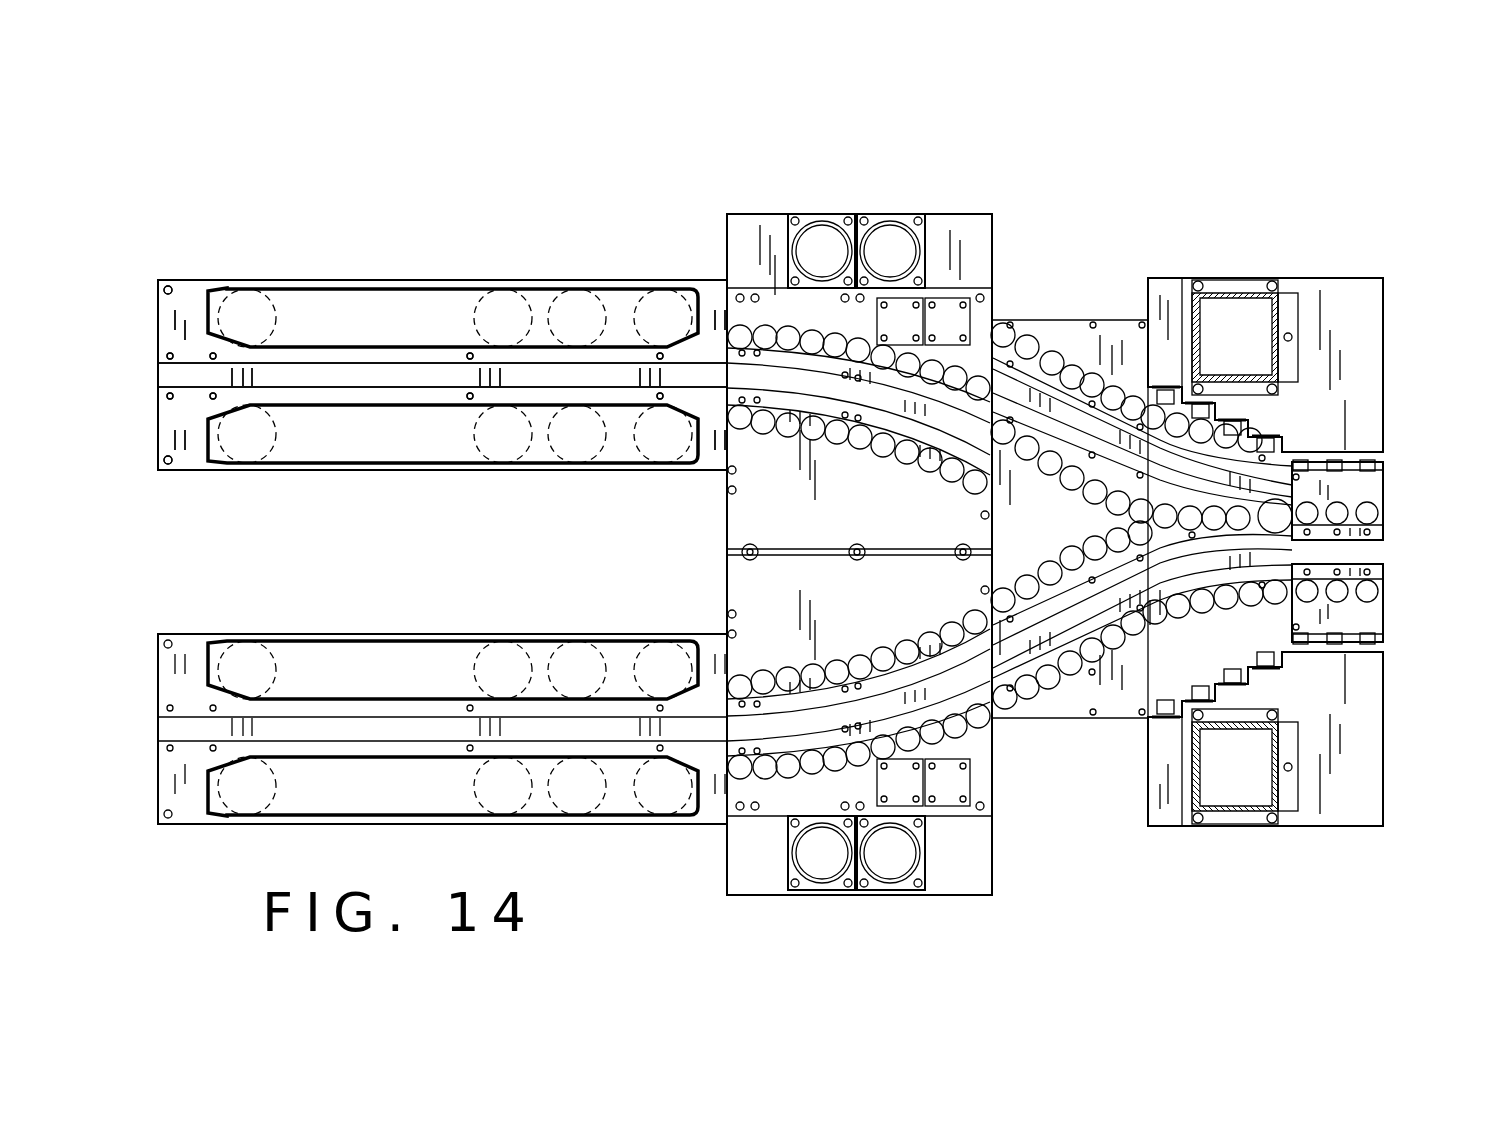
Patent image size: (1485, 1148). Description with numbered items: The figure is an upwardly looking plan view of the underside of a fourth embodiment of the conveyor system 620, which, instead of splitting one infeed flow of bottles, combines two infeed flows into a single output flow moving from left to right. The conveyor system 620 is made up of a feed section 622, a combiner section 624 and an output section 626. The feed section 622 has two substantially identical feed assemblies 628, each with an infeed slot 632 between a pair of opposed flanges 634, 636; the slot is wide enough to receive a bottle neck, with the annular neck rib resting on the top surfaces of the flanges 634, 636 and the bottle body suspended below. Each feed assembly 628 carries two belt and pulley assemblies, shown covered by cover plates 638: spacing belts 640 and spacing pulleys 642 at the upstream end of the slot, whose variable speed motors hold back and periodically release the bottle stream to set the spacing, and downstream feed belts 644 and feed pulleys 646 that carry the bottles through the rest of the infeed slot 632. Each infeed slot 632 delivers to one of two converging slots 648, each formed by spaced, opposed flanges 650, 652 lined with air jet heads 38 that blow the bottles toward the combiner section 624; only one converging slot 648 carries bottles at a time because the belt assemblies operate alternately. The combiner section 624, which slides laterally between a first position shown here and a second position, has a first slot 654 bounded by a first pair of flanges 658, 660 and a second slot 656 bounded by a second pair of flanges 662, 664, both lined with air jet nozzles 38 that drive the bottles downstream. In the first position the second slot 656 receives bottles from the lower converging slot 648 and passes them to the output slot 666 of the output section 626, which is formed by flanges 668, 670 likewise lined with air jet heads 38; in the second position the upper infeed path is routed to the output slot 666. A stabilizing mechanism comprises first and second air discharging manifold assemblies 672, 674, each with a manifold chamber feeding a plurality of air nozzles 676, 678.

The air jet heads 38 is at (775, 330).
The conveyor system 620 is at (1210, 176).
The feed section 622 is at (654, 177).
The combiner section 624 is at (1168, 223).
The output section 626 is at (1434, 403).
The feed assembly 628 is at (207, 268).
The infeed slot 632 is at (340, 372).
The flange 634 is at (380, 362).
The flange 636 is at (405, 389).
The cover plate 638 is at (435, 312).
The spacing belt 640 is at (330, 289).
The spacing pulley 642 is at (282, 290).
The feed belt 644 is at (613, 290).
The feed pulley 646 is at (553, 290).
The converging slot 648 is at (852, 234).
The flange 650 is at (900, 385).
The flange 652 is at (945, 342).
The first slot 654 is at (1090, 420).
The second slot 656 is at (1032, 640).
The flange 658 is at (1052, 358).
The flange 660 is at (1115, 470).
The flange 662 is at (1045, 622).
The flange 664 is at (1060, 605).
The output slot 666 is at (1350, 553).
The flange 668 is at (1388, 512).
The flange 670 is at (1388, 585).
The first air discharging manifold assembly 672 is at (1338, 303).
The second air discharging manifold assembly 674 is at (1360, 812).
The air nozzle 676 is at (1165, 393).
The air nozzle 678 is at (1374, 654).